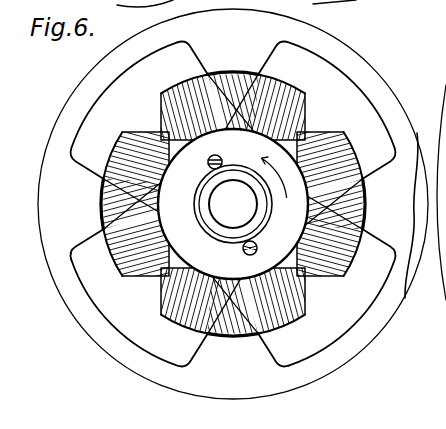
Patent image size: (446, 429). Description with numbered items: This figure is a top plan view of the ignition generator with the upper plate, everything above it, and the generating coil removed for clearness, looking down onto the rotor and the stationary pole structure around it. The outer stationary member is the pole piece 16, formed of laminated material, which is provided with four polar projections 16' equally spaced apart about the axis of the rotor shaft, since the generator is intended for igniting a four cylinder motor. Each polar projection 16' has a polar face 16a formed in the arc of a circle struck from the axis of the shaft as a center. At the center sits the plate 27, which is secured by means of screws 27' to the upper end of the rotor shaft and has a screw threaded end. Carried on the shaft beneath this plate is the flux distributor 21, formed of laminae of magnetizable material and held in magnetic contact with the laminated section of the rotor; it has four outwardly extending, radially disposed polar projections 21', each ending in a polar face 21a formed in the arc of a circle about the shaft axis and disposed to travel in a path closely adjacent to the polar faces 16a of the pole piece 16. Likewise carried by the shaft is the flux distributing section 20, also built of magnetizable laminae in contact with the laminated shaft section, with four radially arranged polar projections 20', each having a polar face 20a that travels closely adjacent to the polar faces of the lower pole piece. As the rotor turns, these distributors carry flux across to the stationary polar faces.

The pole piece 16 is at (233, 204).
The polar projections 16' is at (233, 204).
The polar face 16a is at (102, 217).
The flux distributing section 20 is at (209, 210).
The polar projections 20' is at (226, 206).
The polar face 20a is at (122, 137).
The flux distributor 21 is at (230, 204).
The polar projections 21' is at (222, 202).
The polar face 21a is at (187, 97).
The plate 27 is at (233, 204).
The screws 27' is at (197, 166).